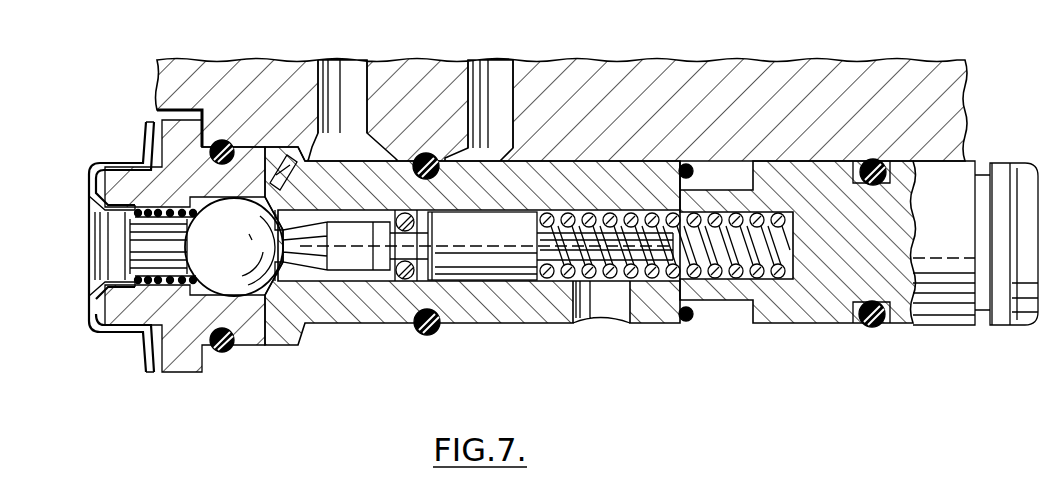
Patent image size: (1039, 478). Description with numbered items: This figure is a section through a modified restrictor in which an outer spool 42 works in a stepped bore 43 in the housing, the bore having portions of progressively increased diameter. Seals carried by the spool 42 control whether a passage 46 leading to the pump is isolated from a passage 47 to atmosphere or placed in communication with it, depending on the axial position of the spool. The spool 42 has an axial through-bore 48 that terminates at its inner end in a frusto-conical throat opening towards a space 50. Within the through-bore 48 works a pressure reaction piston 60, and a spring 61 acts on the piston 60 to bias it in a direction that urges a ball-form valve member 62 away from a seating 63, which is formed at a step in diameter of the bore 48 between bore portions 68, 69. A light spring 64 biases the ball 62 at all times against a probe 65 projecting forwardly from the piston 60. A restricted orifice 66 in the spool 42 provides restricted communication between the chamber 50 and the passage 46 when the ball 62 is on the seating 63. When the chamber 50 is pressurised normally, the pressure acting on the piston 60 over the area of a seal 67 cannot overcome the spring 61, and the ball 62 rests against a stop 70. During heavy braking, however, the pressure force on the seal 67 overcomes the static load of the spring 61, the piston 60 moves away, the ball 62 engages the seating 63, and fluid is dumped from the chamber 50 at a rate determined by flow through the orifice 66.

The outer spool 42 is at (822, 305).
The stepped bore 43 is at (722, 161).
The passage 46 is at (350, 80).
The passage 47 is at (495, 83).
The axial through-bore 48 is at (467, 300).
The space 50 is at (113, 258).
The pressure reaction piston 60 is at (530, 265).
The spring 61 is at (724, 270).
The valve member 62 is at (232, 258).
The seating 63 is at (288, 300).
The light spring 64 is at (150, 285).
The probe 65 is at (362, 252).
The restricted orifice 66 is at (318, 97).
The seal 67 is at (398, 216).
The bore portion 68 is at (504, 322).
The bore portion 69 is at (180, 348).
The stop 70 is at (148, 213).